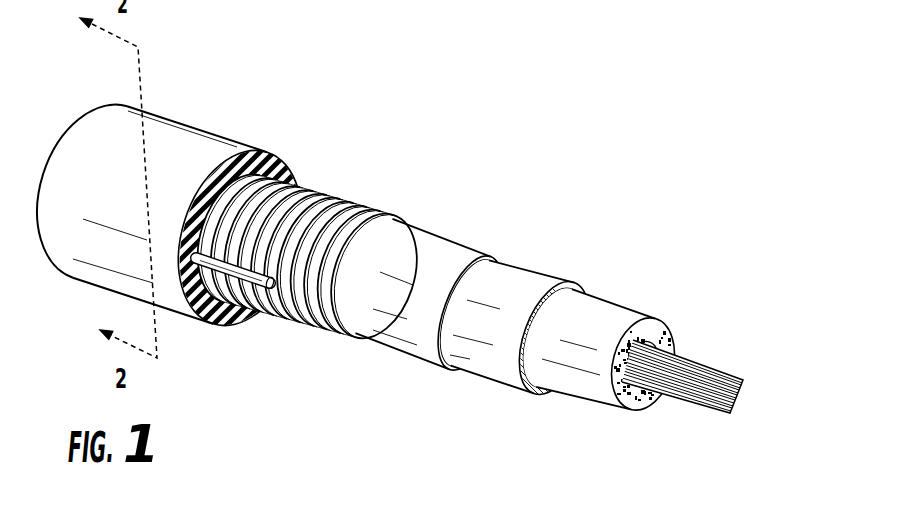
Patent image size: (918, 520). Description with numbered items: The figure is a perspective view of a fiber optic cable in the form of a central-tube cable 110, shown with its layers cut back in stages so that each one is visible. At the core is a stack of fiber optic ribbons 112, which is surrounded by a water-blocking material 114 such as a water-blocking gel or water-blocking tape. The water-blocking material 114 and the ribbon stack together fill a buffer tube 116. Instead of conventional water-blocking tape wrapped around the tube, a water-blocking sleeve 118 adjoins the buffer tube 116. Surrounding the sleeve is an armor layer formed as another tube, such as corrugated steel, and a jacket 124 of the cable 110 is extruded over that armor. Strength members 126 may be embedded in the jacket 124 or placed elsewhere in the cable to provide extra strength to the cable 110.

The central-tube cable 110 is at (414, 270).
The stack of fiber optic ribbons 112 is at (722, 370).
The water-blocking material 114 is at (652, 322).
The buffer tube 116 is at (537, 284).
The water-blocking sleeve 118 is at (441, 250).
The jacket 124 is at (207, 128).
The strength members 126 is at (293, 323).